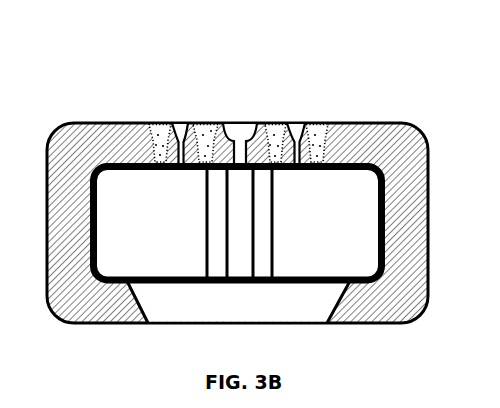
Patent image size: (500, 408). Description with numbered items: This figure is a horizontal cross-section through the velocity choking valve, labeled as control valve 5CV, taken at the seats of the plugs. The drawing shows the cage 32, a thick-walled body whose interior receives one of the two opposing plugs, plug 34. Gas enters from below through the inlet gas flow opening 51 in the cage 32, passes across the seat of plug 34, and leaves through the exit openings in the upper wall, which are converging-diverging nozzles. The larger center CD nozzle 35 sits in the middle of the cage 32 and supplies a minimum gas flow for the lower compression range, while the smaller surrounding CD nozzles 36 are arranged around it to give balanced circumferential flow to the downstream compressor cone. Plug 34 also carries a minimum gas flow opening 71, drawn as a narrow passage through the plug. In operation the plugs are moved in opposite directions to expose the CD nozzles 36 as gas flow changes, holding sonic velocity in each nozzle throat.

The control valve 5CV is at (221, 189).
The cage 32 is at (65, 125).
The plug 34 is at (340, 187).
The center CD nozzle 35 is at (244, 123).
The surrounding CD nozzle 36 is at (297, 132).
The inlet gas flow opening 51 is at (315, 312).
The minimum gas flow opening 71 is at (218, 267).